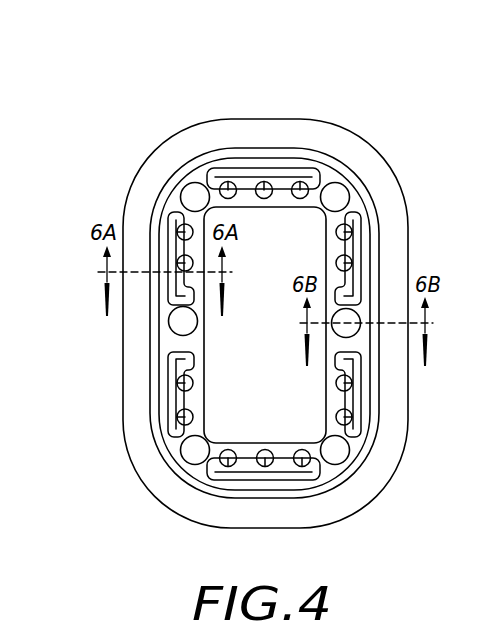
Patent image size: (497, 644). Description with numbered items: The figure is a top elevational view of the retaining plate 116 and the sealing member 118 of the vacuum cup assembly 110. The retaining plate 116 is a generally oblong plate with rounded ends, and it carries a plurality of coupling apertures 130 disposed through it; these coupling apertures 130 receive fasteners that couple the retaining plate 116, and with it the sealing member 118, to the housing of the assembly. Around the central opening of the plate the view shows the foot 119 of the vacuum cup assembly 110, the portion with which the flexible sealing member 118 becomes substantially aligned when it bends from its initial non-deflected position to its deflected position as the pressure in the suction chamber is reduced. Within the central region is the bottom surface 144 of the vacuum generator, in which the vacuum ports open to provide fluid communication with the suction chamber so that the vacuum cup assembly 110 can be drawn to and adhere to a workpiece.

The vacuum cup assembly 110 is at (152, 105).
The retaining plate 116 is at (282, 232).
The sealing member 118 is at (160, 158).
The foot 119 is at (242, 170).
The coupling apertures 130 is at (192, 197).
The bottom surface 144 is at (270, 378).